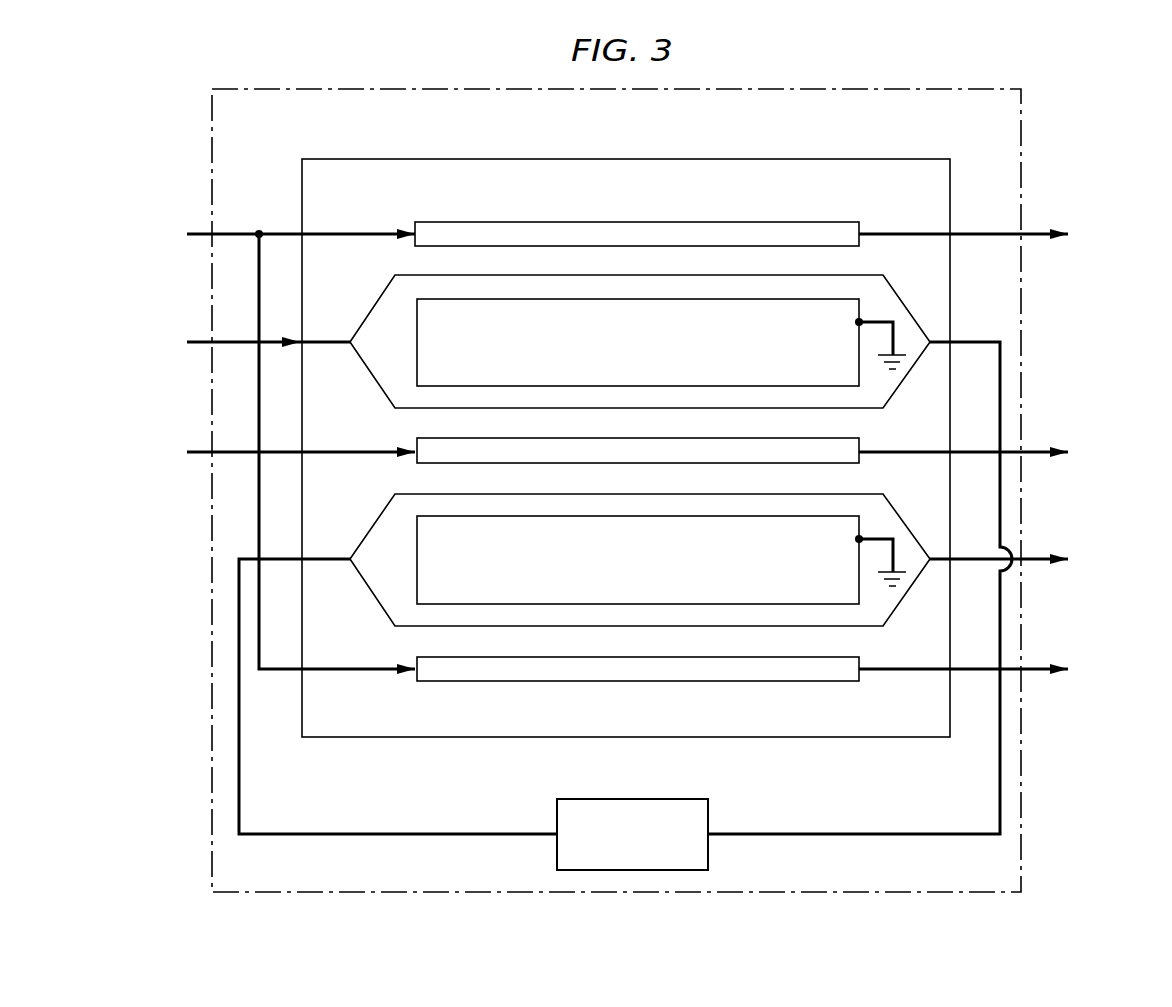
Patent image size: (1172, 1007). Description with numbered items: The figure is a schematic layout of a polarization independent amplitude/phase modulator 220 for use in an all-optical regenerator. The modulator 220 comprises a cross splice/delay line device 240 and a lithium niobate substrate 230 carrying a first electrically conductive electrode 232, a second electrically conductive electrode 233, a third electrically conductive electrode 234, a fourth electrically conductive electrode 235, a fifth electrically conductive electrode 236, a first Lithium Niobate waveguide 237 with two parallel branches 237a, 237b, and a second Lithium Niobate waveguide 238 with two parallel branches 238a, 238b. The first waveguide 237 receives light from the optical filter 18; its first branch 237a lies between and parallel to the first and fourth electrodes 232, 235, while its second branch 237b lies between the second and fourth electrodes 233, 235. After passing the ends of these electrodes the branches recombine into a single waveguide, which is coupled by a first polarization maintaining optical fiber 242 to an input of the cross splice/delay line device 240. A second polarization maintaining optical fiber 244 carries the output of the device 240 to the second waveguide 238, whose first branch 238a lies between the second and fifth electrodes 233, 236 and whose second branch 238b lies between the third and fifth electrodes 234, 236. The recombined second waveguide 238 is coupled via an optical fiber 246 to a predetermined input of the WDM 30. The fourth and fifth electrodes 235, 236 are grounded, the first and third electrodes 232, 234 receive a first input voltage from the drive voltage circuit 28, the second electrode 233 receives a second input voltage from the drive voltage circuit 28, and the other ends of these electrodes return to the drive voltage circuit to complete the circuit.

The polarization independent amplitude/phase modulator 220 is at (962, 89).
The lithium niobate substrate 230 is at (432, 159).
The first electrically conductive electrode 232 is at (456, 222).
The second electrically conductive electrode 233 is at (862, 461).
The third electrically conductive electrode 234 is at (458, 683).
The fourth electrically conductive electrode 235 is at (417, 328).
The fifth electrically conductive electrode 236 is at (417, 546).
The first Lithium Niobate waveguide 237 is at (633, 348).
The first branch of first waveguide 237a is at (378, 300).
The second branch of first waveguide 237b is at (386, 396).
The second Lithium Niobate waveguide 238 is at (635, 567).
The first branch of second waveguide 238a is at (379, 519).
The second branch of second waveguide 238b is at (388, 616).
The cross splice/delay line device 240 is at (592, 799).
The first polarization maintaining optical fiber 242 is at (963, 342).
The second polarization maintaining optical fiber 244 is at (441, 835).
The optical fiber 246 is at (1033, 562).
The drive voltage circuit 28 is at (116, 273).
The optical filter 18 is at (116, 378).
The WDM 30 is at (1104, 595).